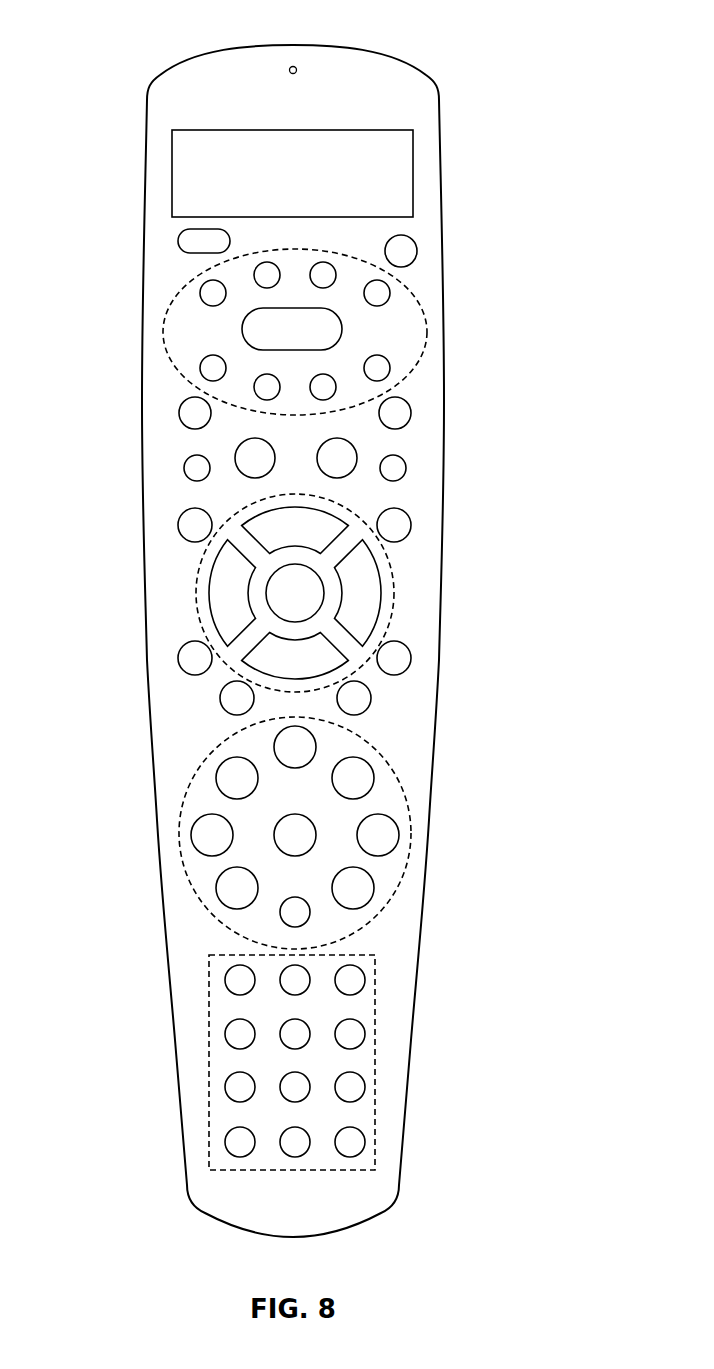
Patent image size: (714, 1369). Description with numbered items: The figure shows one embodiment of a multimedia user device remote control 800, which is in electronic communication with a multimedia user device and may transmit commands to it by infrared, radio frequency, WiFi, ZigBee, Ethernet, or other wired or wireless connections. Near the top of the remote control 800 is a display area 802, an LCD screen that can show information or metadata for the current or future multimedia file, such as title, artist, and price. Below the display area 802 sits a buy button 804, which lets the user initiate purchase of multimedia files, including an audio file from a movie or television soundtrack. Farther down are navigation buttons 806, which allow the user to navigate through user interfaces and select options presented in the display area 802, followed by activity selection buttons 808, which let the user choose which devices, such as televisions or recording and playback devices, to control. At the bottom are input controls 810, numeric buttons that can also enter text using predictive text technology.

The multimedia user device remote control 800 is at (500, 60).
The display area 802 is at (292, 173).
The buy button 804 is at (242, 326).
The navigation buttons 806 is at (193, 592).
The activity selection buttons 808 is at (178, 831).
The input controls 810 is at (209, 1055).